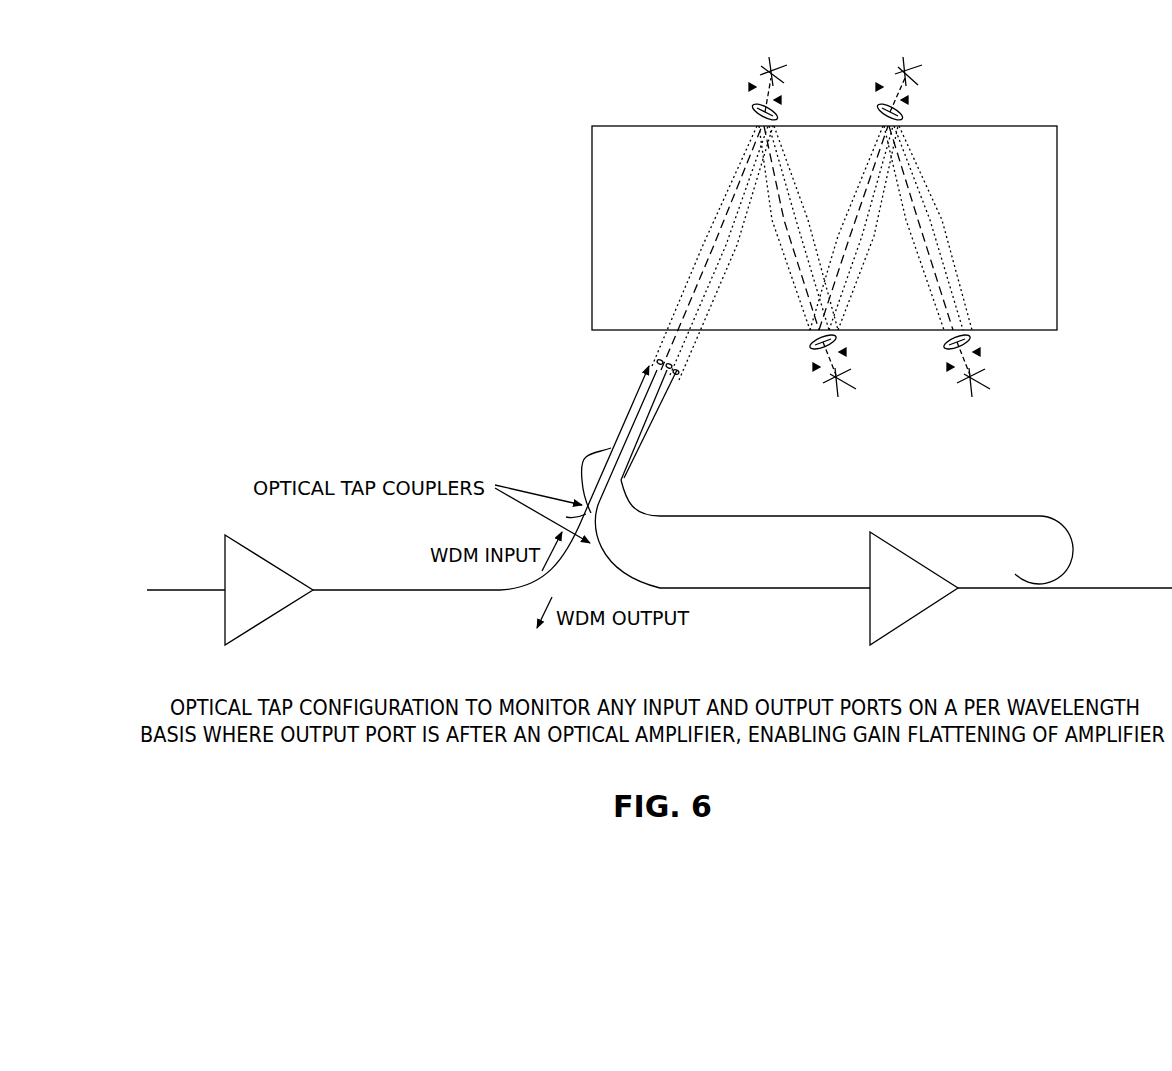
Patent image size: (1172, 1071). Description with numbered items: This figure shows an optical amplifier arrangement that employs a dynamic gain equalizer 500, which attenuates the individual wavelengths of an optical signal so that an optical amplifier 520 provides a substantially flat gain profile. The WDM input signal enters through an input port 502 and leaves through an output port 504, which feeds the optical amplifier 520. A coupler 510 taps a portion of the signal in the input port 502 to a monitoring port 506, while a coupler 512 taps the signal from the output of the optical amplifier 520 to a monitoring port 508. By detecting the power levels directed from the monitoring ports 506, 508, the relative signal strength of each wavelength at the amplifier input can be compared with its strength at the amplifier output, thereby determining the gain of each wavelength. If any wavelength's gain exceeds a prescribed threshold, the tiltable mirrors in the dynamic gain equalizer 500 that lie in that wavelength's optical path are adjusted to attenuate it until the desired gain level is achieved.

The dynamic gain equalizer 500 is at (985, 88).
The input port 502 is at (382, 590).
The output port 504 is at (752, 587).
The monitoring port 506 is at (634, 400).
The monitoring port 508 is at (660, 410).
The coupler 510 is at (582, 472).
The coupler 512 is at (1078, 571).
The optical amplifier 520 is at (923, 610).